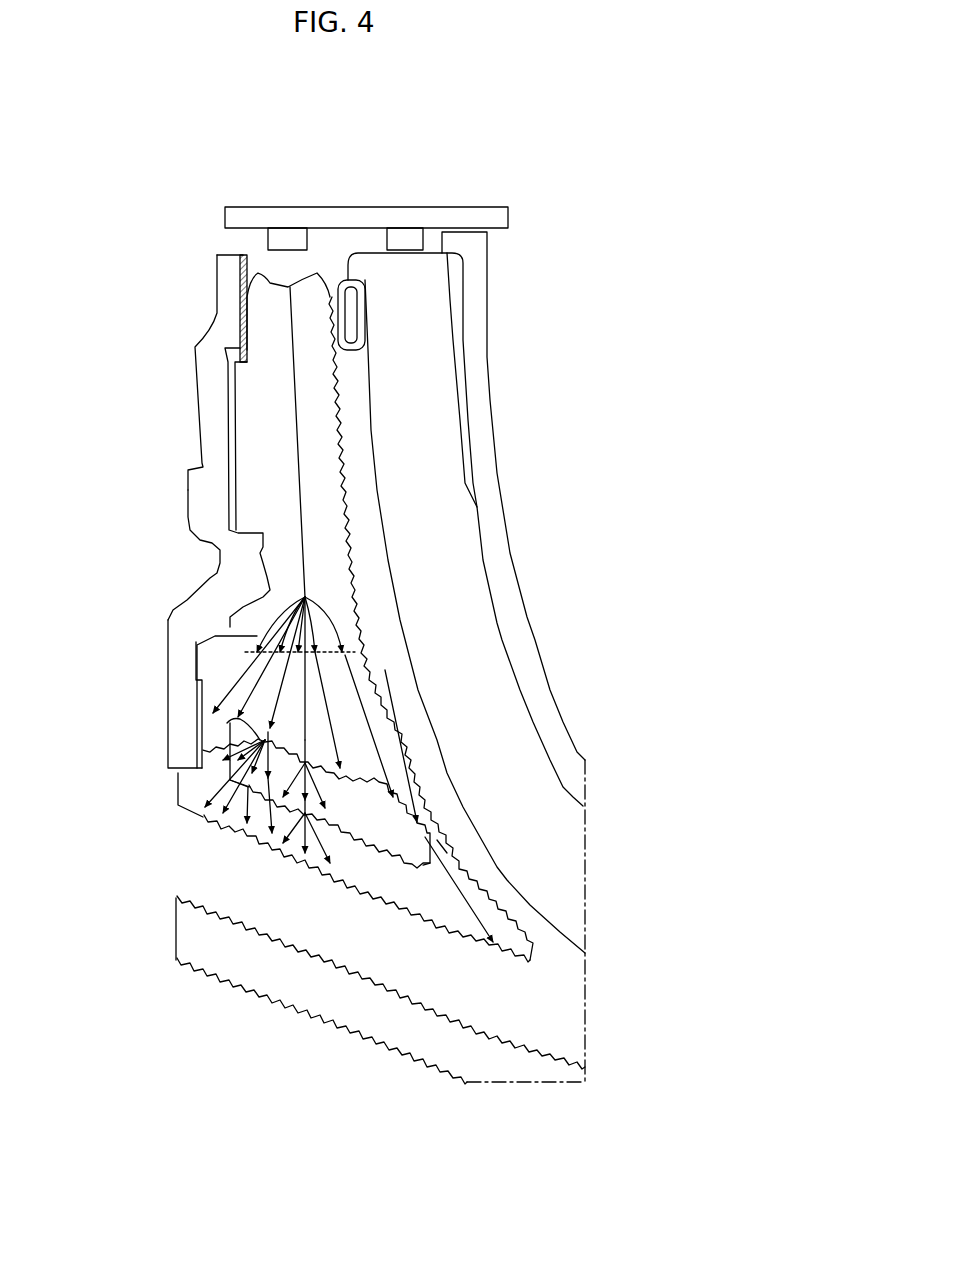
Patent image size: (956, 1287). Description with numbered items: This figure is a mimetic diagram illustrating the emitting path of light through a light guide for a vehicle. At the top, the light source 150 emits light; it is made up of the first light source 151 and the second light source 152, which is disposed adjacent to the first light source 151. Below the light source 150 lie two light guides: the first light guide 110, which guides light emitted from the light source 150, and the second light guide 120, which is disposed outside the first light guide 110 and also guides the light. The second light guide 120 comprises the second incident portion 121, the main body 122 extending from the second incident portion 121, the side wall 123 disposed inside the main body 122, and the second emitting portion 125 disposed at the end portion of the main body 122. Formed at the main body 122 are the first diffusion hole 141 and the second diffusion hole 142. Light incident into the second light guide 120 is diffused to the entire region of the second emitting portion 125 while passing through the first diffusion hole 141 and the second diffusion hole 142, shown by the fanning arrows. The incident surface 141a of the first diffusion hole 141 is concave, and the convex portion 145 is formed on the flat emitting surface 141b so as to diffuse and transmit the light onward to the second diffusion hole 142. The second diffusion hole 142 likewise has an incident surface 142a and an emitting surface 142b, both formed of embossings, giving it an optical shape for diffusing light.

The first light guide 110 is at (488, 560).
The second light guide 120 is at (345, 400).
The second incident portion 121 is at (262, 258).
The main body 122 is at (275, 440).
The side wall 123 is at (345, 510).
The second emitting portion 125 is at (215, 823).
The first diffusion hole 141 is at (245, 630).
The incident surface 141a is at (300, 595).
The flat emitting surface 141b is at (240, 681).
The second diffusion hole 142 is at (235, 743).
The incident surface 142a is at (355, 785).
The emitting surface 142b is at (371, 845).
The convex portion 145 is at (355, 669).
The light source 150 is at (385, 122).
The first light source 151 is at (407, 240).
The second light source 152 is at (288, 241).